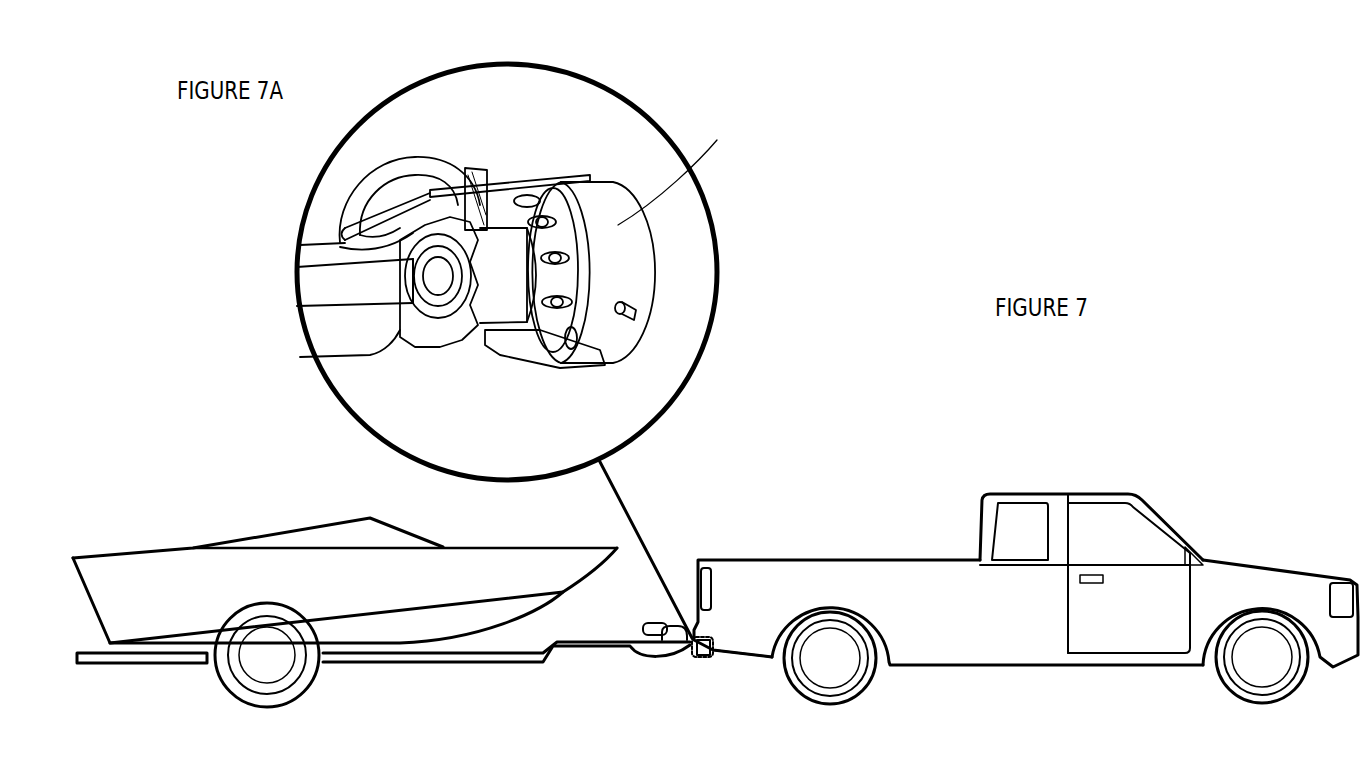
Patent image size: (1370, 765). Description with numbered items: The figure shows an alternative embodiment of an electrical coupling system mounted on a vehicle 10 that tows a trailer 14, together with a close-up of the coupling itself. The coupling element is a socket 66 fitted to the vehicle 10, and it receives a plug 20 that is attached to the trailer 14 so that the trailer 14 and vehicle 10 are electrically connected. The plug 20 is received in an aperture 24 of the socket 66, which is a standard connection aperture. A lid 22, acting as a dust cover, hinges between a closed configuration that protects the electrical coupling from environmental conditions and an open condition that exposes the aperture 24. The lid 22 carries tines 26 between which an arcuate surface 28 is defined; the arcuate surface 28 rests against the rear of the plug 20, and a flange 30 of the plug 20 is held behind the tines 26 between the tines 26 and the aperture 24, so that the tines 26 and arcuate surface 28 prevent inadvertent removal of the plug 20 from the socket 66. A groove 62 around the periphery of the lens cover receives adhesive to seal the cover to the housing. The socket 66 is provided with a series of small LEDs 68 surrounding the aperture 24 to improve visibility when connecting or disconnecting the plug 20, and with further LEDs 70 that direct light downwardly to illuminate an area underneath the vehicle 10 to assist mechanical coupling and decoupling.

In FIG. 7, the vehicle 10 is at (1107, 453).
In FIG. 7, the trailer 14 is at (247, 525).
In FIG. 7, the socket 66 is at (700, 660).
In FIG. 7A, the plug 20 is at (473, 180).
In FIG. 7A, the lid 22 is at (393, 163).
In FIG. 7A, the aperture 24 is at (487, 303).
In FIG. 7A, the tines 26 is at (293, 247).
In FIG. 7A, the arcuate surface 28 is at (347, 230).
In FIG. 7A, the flange 30 is at (320, 357).
In FIG. 7A, the groove 62 is at (545, 212).
In FIG. 7A, the LEDs 68 is at (565, 288).
In FIG. 7A, the further LEDs 70 is at (637, 312).